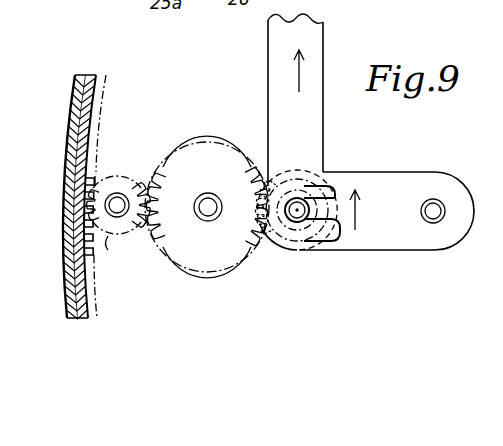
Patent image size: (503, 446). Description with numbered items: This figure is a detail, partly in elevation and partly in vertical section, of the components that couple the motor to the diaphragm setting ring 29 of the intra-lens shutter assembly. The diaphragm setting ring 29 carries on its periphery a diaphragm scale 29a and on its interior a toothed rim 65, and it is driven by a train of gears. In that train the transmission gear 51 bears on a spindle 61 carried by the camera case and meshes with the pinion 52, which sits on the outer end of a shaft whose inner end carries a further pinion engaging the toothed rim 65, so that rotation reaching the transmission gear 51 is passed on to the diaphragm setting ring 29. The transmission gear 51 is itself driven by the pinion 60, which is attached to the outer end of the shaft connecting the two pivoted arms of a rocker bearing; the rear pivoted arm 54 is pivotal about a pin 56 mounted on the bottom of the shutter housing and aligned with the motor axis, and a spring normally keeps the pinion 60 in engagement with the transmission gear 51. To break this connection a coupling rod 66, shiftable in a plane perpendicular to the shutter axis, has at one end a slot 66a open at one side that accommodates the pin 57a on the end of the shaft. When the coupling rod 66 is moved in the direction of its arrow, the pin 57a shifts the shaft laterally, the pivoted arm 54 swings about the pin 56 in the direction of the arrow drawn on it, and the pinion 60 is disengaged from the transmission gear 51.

The diaphragm setting ring 29 is at (80, 156).
The diaphragm scale 29a is at (73, 127).
The toothed rim 65 is at (96, 177).
The pinion 52 is at (108, 233).
The transmission gear 51 is at (178, 262).
The spindle 61 is at (203, 197).
The coupling rod 66 is at (309, 128).
The slot 66a is at (322, 188).
The pivoted arm 54 is at (400, 245).
The pin 56 is at (440, 208).
The pinion 60 is at (340, 222).
The pin 57a is at (297, 212).